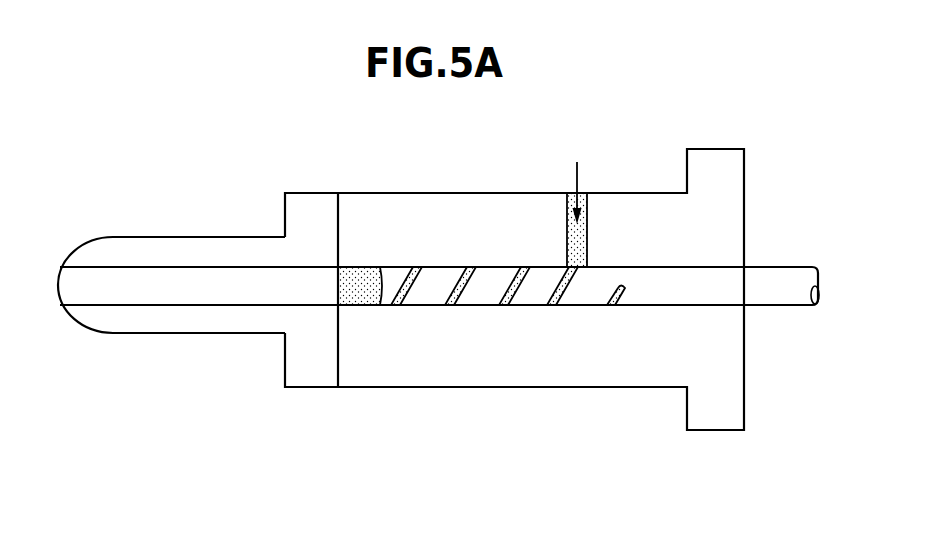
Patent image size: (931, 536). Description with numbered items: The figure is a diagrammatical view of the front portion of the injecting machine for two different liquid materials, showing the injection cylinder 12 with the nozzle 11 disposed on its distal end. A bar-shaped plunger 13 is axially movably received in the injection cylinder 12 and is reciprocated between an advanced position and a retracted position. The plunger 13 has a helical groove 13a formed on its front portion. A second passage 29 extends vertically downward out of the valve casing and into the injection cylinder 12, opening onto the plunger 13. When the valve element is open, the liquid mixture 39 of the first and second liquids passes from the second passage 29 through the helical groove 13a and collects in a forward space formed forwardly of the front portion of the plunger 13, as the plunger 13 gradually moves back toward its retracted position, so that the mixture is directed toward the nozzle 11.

The nozzle 11 is at (198, 322).
The injection cylinder 12 is at (532, 362).
The plunger 13 is at (672, 290).
The helical groove 13a is at (565, 272).
The second passage 29 is at (575, 197).
The liquid mixture 39 is at (367, 267).